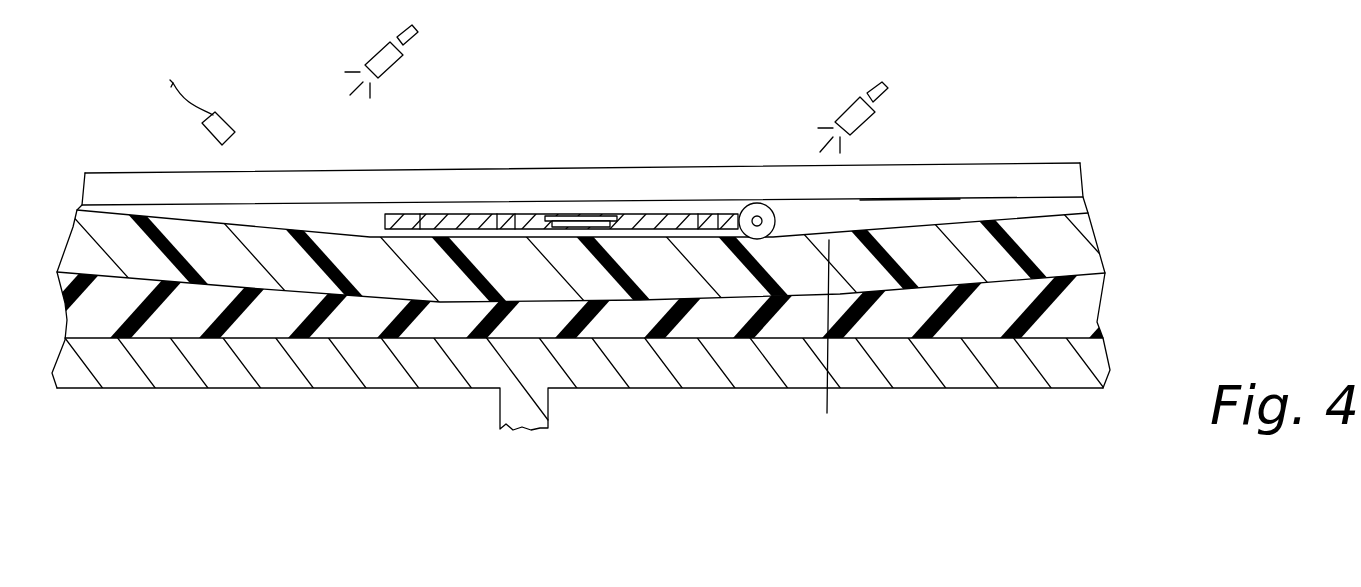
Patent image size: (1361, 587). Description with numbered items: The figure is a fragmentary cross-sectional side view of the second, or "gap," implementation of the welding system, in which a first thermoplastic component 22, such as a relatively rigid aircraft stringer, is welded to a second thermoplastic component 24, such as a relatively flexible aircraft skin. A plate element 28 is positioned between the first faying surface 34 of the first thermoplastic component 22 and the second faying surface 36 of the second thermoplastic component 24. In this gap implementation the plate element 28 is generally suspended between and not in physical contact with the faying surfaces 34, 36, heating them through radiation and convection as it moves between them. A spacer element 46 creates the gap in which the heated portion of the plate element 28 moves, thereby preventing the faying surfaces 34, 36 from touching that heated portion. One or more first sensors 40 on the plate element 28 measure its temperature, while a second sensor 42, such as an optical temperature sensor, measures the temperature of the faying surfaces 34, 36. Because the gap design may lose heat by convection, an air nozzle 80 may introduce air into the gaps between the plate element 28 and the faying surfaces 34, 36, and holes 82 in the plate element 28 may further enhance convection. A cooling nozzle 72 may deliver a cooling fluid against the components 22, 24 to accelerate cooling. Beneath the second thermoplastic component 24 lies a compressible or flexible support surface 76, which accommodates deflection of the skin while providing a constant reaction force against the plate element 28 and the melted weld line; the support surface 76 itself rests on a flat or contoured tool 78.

The first thermoplastic component 22 is at (1062, 182).
The second thermoplastic component 24 is at (1083, 252).
The plate element 28 is at (455, 220).
The first faying surface 34 is at (903, 197).
The second faying surface 36 is at (826, 343).
The first sensor 40 is at (593, 216).
The second sensor 42 is at (220, 122).
The spacer element 46 is at (769, 206).
The cooling nozzle 72 is at (381, 55).
The support surface 76 is at (1077, 293).
The tool 78 is at (1072, 367).
The air nozzle 80 is at (853, 108).
The holes 82 is at (509, 216).